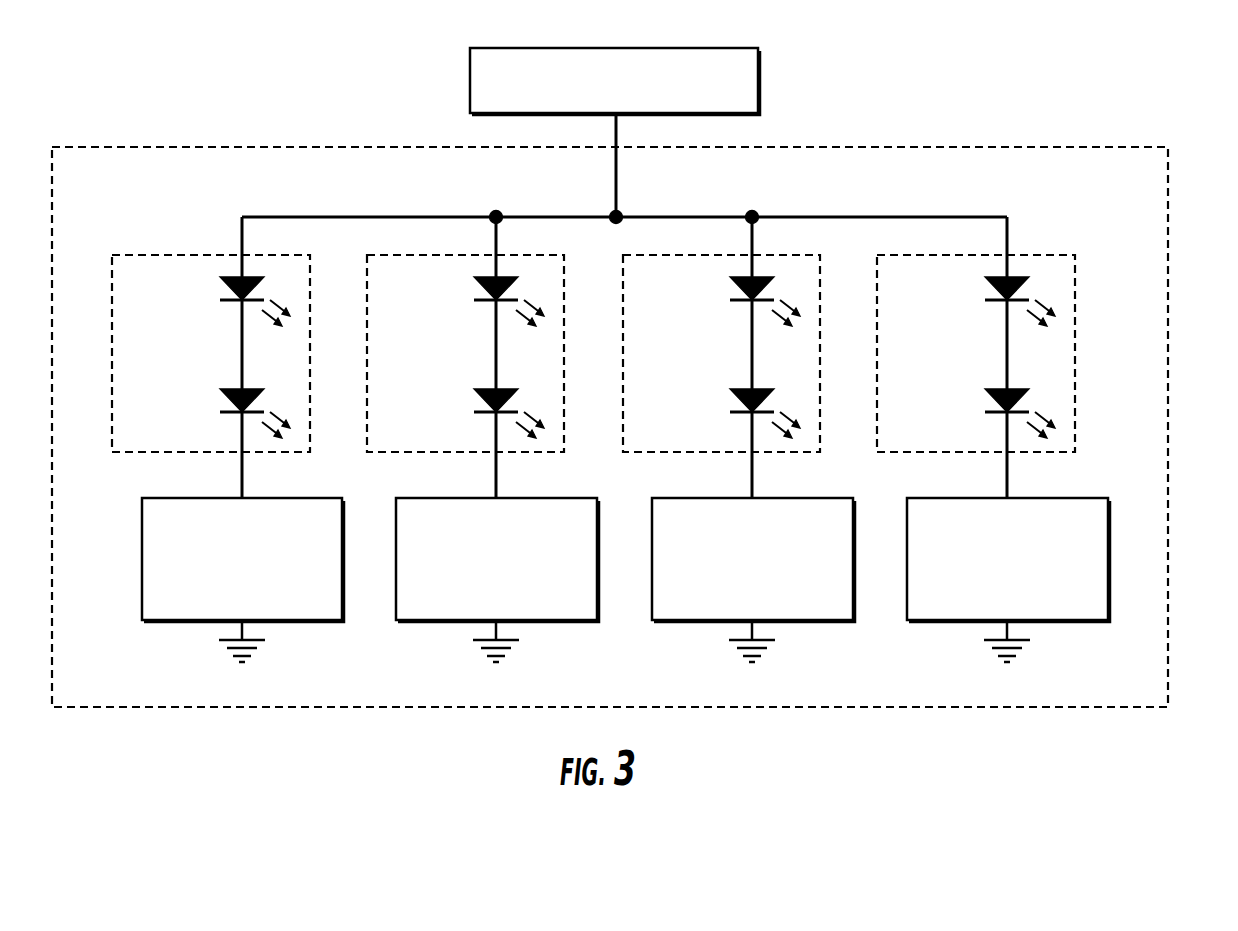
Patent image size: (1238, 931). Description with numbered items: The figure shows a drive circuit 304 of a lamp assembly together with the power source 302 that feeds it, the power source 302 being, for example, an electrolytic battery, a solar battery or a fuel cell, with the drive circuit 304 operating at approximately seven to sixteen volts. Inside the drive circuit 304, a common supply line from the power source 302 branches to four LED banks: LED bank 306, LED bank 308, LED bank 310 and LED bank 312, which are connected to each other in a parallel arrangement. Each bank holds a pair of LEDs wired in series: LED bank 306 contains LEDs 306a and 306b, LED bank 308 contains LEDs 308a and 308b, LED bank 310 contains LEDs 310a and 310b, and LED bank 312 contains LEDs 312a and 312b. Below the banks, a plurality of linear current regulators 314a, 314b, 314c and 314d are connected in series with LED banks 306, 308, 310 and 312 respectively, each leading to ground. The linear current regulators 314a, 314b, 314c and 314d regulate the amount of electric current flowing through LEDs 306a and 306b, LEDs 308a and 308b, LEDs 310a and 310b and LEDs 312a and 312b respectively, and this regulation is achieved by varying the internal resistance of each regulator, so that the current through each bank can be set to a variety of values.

The power source 302 is at (758, 92).
The drive circuit 304 is at (1168, 430).
The LED bank 306 is at (262, 255).
The LED 306a is at (228, 391).
The LED 306b is at (228, 279).
The LED bank 308 is at (460, 255).
The LED 308a is at (482, 391).
The LED 308b is at (482, 279).
The LED bank 310 is at (645, 255).
The LED 310a is at (738, 391).
The LED 310b is at (738, 279).
The LED bank 312 is at (900, 255).
The LED 312a is at (993, 391).
The LED 312b is at (993, 279).
The linear current regulator 314a is at (342, 567).
The linear current regulator 314b is at (597, 567).
The linear current regulator 314c is at (853, 567).
The linear current regulator 314d is at (1108, 567).